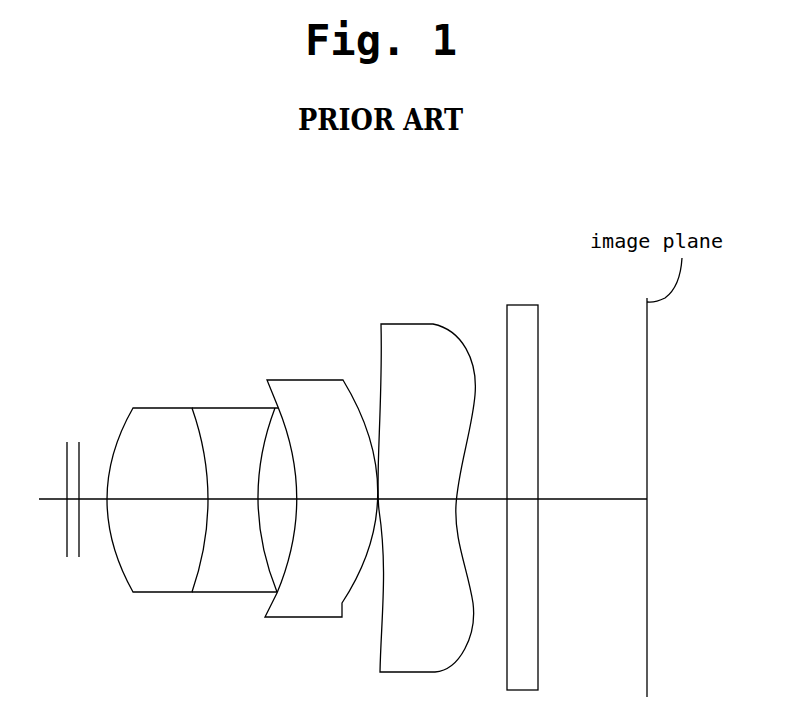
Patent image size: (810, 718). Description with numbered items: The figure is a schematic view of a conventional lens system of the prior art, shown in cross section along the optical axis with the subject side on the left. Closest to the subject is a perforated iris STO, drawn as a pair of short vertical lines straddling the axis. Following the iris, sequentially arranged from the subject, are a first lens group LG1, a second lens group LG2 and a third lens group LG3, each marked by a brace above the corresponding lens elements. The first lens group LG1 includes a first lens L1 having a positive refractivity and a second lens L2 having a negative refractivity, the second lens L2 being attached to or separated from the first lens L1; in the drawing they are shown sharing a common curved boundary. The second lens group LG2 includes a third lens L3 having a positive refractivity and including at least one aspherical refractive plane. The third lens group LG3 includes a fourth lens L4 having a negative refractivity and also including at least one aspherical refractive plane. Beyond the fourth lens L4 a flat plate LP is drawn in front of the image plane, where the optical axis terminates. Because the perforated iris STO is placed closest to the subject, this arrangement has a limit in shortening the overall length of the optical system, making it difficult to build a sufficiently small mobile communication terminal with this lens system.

The perforated iris STO is at (78, 437).
The first lens group LG1 is at (192, 445).
The first lens L1 is at (152, 410).
The second lens L2 is at (235, 468).
The second lens group LG2 is at (321, 450).
The third lens L3 is at (328, 387).
The third lens group LG3 is at (426, 450).
The fourth lens L4 is at (415, 330).
The low pass filter / cover glass plate LP is at (527, 315).